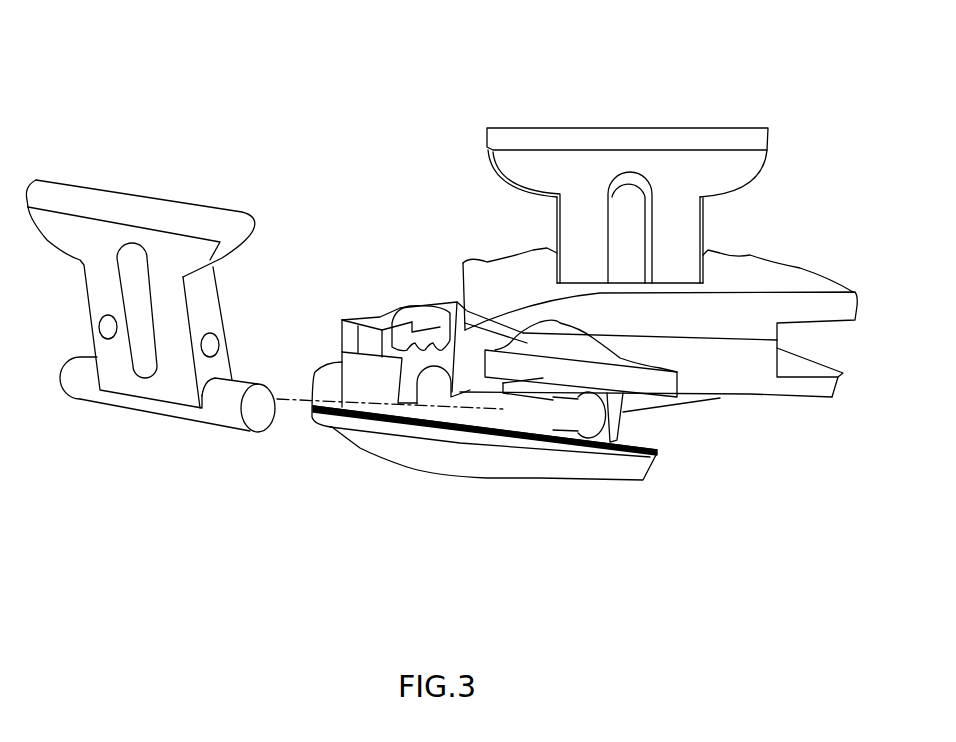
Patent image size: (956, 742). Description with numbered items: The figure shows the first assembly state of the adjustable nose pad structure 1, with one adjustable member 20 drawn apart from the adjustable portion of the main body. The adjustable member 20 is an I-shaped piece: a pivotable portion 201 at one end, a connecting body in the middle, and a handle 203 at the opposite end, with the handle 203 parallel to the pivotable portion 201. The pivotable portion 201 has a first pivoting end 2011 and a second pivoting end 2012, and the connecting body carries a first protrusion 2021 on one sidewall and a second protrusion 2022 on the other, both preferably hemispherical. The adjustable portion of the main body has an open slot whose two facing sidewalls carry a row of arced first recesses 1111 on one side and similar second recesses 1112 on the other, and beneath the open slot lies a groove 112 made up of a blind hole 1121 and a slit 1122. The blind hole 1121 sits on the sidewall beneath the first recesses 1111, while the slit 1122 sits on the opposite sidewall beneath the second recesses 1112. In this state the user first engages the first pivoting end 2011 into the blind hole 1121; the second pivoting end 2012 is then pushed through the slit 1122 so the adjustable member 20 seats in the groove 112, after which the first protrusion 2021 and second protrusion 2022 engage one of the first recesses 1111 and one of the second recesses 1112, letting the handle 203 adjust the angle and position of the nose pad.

The adjustable nose pad structure 1 is at (343, 89).
The adjustable member 20 is at (76, 175).
The pivotable portion 201 is at (170, 412).
The first pivoting end 2011 is at (78, 378).
The second pivoting end 2012 is at (260, 408).
The first protrusion 2021 is at (108, 330).
The second protrusion 2022 is at (215, 342).
The handle 203 is at (150, 212).
The groove 112 is at (495, 543).
The first recesses 1111 is at (547, 250).
The second recesses 1112 is at (720, 253).
The blind hole 1121 is at (435, 388).
The slit 1122 is at (543, 410).